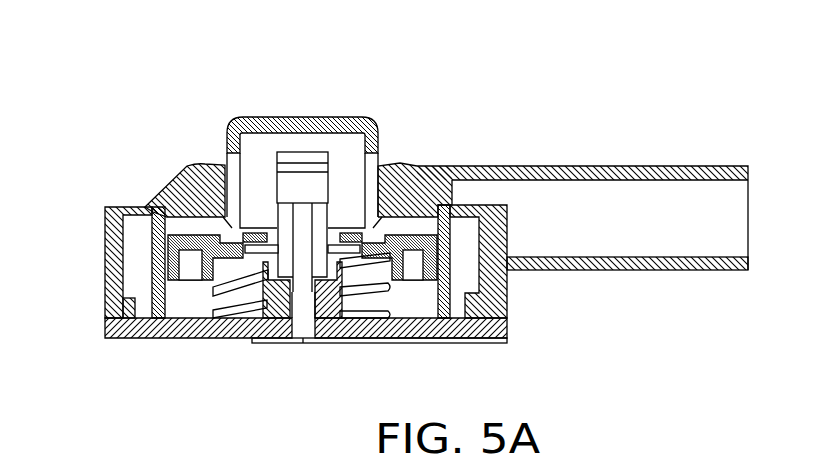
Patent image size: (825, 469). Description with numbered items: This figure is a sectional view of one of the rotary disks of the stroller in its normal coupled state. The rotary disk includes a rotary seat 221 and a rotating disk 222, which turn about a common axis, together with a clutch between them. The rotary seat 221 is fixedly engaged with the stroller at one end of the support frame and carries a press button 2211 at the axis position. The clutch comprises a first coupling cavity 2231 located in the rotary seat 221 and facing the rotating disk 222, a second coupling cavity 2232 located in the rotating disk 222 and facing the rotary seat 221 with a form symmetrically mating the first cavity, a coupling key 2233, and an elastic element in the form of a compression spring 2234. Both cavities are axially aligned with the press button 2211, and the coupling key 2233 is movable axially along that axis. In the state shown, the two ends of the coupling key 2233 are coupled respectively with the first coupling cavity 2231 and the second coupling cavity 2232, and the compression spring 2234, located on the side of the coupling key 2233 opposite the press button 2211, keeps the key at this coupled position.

The rotary seat 221 is at (668, 173).
The rotating disk 222 is at (507, 325).
The press button 2211 is at (368, 120).
The first coupling cavity 2231 is at (145, 205).
The second coupling cavity 2232 is at (152, 284).
The coupling key 2233 is at (448, 215).
The compression spring 2234 is at (226, 318).